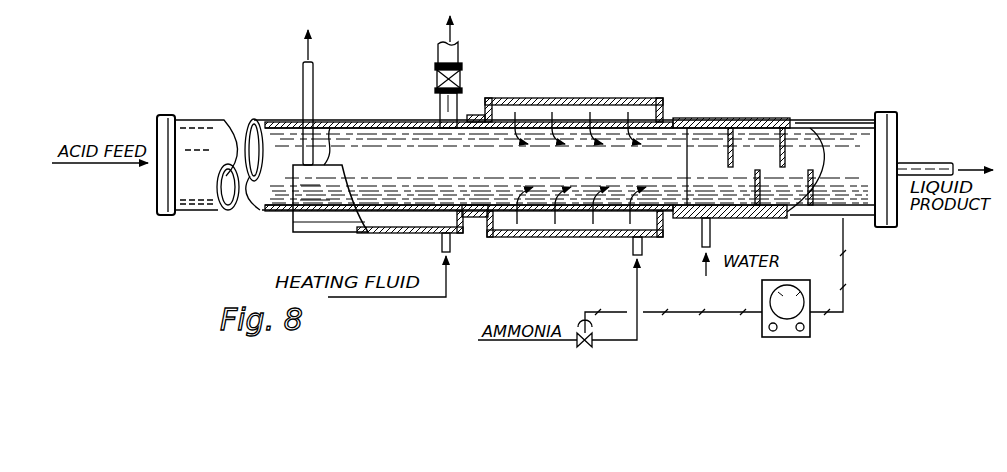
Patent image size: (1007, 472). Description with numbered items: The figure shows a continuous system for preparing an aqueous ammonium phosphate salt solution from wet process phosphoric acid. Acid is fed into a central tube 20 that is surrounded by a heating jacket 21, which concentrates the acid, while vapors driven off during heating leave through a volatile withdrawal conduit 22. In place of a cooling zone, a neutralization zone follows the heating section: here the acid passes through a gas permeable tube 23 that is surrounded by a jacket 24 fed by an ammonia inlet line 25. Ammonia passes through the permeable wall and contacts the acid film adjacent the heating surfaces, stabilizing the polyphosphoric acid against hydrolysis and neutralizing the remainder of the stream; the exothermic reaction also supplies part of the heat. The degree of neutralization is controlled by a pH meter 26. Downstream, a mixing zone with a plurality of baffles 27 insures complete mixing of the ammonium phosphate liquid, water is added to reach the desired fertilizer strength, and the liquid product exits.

The central tube 20 is at (277, 124).
The heating jacket 21 is at (293, 229).
The volatile withdrawal conduit 22 is at (445, 100).
The gas permeable tube 23 is at (537, 123).
The jacket 24 is at (666, 104).
The ammonia inlet line 25 is at (633, 247).
The pH meter 26 is at (768, 328).
The baffles 27 is at (757, 119).